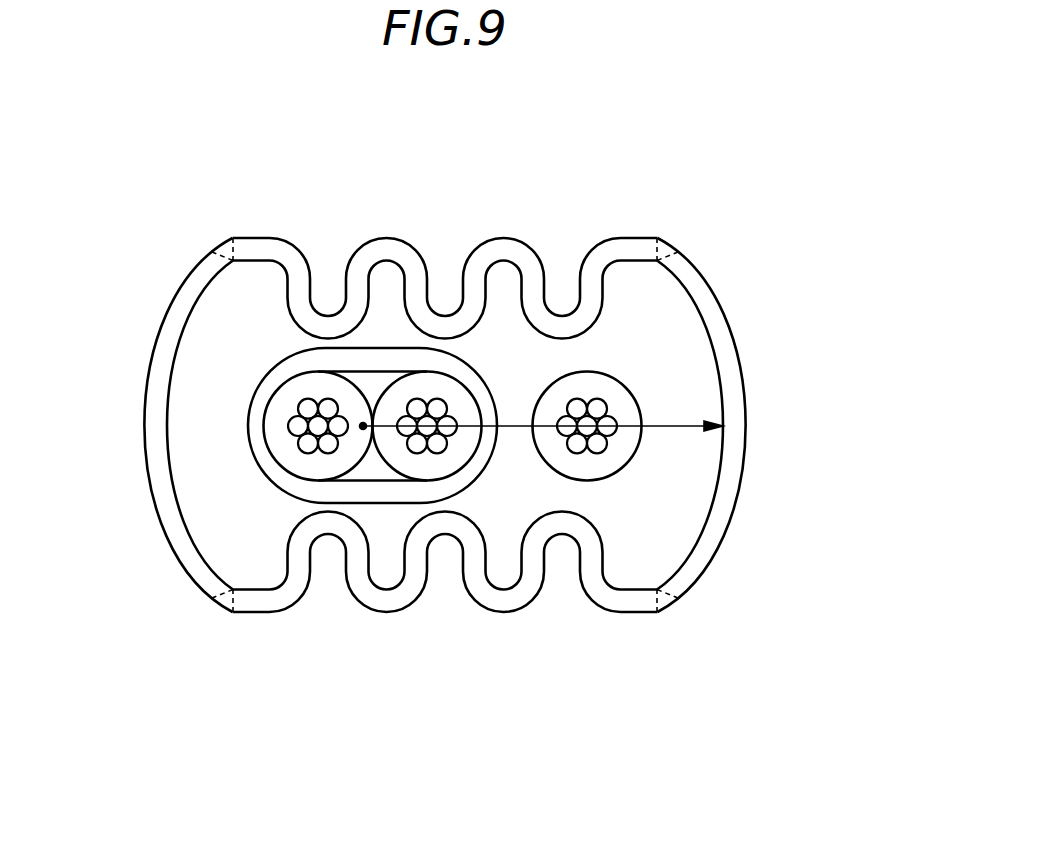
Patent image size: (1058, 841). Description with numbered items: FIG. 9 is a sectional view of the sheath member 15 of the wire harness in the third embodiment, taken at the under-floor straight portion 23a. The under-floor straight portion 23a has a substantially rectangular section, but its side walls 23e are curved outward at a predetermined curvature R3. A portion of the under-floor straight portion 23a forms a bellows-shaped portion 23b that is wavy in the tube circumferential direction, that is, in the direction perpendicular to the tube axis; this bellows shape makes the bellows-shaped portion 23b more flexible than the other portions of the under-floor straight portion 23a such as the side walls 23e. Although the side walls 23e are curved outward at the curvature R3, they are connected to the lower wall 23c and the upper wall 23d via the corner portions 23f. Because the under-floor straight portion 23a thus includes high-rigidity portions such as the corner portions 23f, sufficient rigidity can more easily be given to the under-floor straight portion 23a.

The sheath member 15 is at (703, 185).
The under-floor straight portion 23a is at (518, 608).
The bellows-shaped portion 23b is at (427, 268).
The lower wall 23c is at (332, 602).
The upper wall 23d is at (578, 268).
The side wall 23e is at (157, 375).
The corner portion 23f is at (215, 240).
The predetermined curvature R3 is at (685, 428).